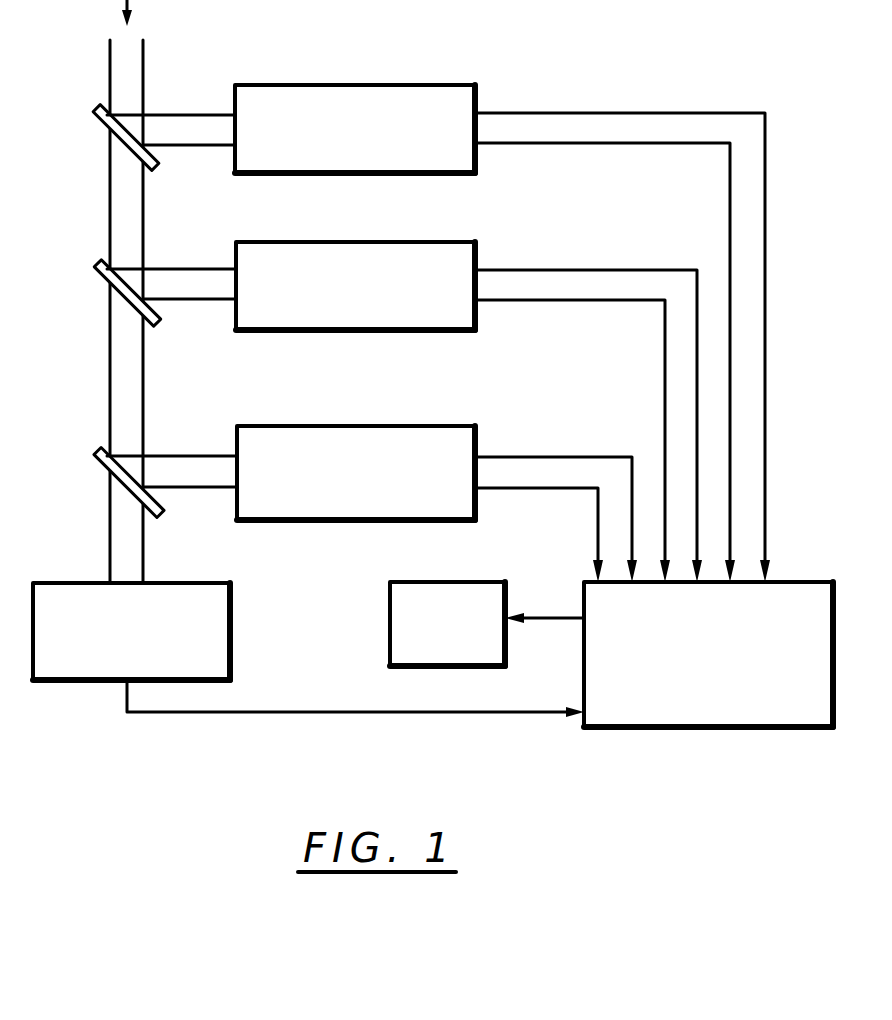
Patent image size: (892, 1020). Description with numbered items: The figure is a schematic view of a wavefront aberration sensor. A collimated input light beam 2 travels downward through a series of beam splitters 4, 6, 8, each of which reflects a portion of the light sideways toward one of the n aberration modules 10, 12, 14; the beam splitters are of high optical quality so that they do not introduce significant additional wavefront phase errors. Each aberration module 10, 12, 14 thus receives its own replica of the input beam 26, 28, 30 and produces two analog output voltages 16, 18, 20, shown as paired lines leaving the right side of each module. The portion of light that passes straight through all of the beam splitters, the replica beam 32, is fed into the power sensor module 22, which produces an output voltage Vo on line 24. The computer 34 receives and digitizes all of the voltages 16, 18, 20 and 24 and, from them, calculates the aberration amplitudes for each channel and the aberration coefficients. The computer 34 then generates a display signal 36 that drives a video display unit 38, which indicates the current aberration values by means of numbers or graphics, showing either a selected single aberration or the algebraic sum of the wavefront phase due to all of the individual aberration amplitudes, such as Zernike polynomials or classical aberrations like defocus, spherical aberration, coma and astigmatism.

The input light beam 2 is at (128, 50).
The beam splitter 4 is at (102, 122).
The beam splitter 6 is at (107, 277).
The beam splitter 8 is at (107, 465).
The aberration module 10 is at (265, 175).
The aberration module 12 is at (265, 333).
The aberration module 14 is at (270, 523).
The analog output voltages 16 is at (570, 147).
The analog output voltages 18 is at (547, 302).
The analog output voltages 20 is at (513, 490).
The power sensor module 22 is at (75, 583).
The output voltage Vo 24 is at (172, 712).
The replica of the input beam 26 is at (223, 148).
The replica of the input beam 28 is at (220, 305).
The replica of the input beam 30 is at (227, 490).
The replica beam 32 is at (144, 562).
The computer 34 is at (790, 578).
The display signal 36 is at (551, 620).
The video display unit 38 is at (390, 628).